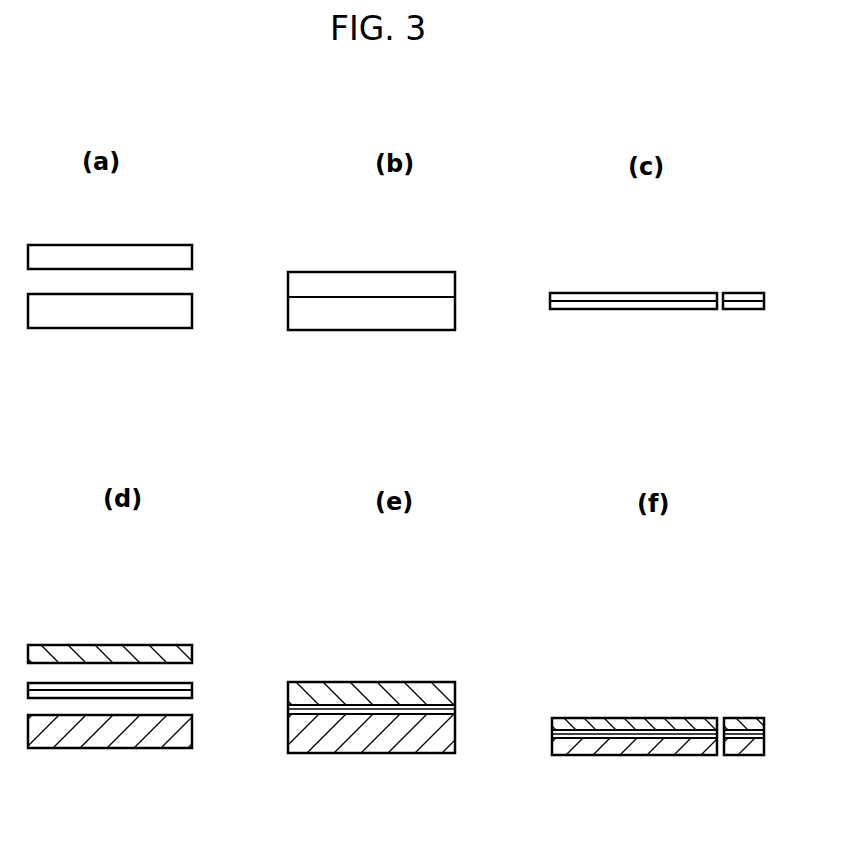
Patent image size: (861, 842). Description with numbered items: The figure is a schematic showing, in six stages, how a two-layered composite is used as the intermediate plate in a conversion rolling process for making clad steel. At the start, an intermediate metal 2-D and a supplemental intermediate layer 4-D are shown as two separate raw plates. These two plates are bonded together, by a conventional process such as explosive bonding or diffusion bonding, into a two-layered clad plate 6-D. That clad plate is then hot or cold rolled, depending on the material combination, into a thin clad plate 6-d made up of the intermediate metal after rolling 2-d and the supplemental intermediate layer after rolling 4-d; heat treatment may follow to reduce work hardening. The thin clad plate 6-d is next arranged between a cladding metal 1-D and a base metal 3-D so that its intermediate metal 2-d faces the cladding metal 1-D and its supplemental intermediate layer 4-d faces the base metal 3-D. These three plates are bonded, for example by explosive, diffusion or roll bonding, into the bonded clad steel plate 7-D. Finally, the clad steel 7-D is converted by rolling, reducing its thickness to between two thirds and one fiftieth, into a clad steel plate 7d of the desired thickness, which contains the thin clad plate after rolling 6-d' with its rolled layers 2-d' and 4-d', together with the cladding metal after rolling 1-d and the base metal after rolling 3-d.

The intermediate metal 2-D is at (79, 252).
The supplemental intermediate layer 4-D is at (114, 307).
The clad plate 6-D is at (452, 236).
The thin clad plate 6-d is at (417, 399).
The intermediate metal after rolling 2-d is at (396, 478).
The supplemental intermediate layer after rolling 4-d is at (399, 477).
The cladding metal 1-D is at (47, 654).
The base metal 3-D is at (140, 723).
The bonded clad steel plate 7-D is at (477, 565).
The clad steel plate 7d is at (765, 605).
The thin clad plate after rolling 6-d' is at (661, 627).
The intermediate metal after final rolling 2-d' is at (658, 692).
The supplemental intermediate layer after final rolling 4-d' is at (679, 691).
The cladding metal after rolling 1-d is at (580, 723).
The base metal after rolling 3-d is at (697, 746).